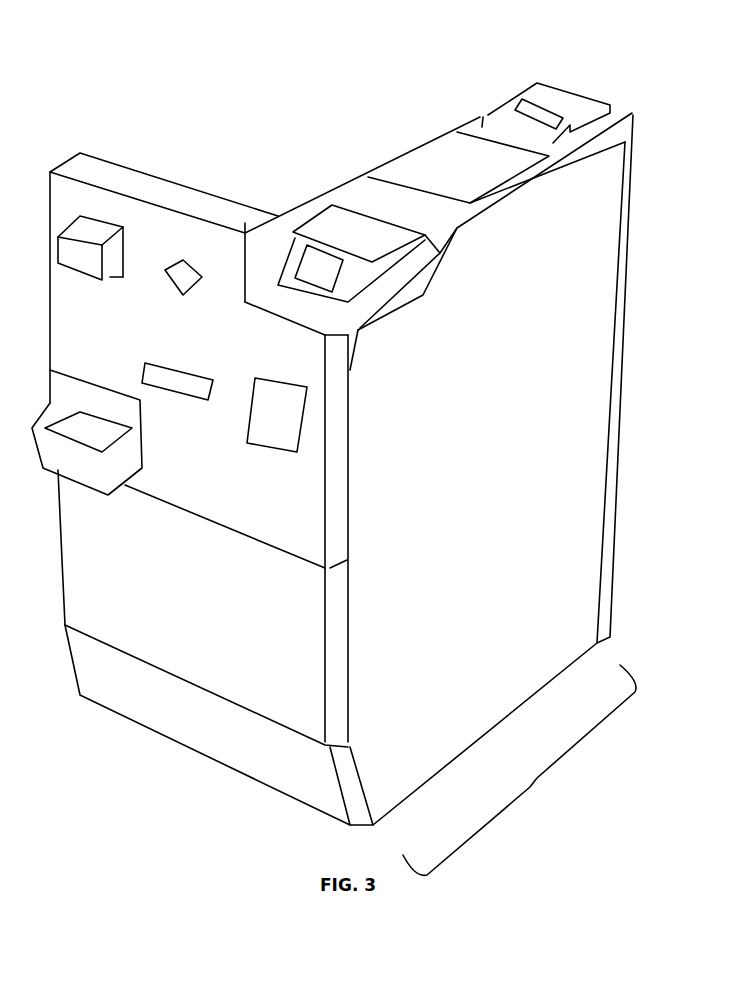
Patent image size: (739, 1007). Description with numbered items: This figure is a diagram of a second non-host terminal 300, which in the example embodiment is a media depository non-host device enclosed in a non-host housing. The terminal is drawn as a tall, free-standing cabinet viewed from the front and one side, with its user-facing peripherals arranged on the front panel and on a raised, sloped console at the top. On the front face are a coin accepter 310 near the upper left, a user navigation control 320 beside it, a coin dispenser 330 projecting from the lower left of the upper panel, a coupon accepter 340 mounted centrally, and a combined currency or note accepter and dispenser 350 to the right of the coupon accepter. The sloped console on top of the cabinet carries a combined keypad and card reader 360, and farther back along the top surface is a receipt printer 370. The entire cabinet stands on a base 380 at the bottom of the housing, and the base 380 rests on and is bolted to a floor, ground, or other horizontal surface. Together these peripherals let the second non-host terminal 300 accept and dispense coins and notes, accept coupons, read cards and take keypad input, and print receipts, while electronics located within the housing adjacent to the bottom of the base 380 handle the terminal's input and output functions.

The second non-host terminal 300 is at (412, 88).
The coin accepter 310 is at (72, 270).
The user navigation control 320 is at (182, 262).
The coin dispenser 330 is at (88, 475).
The coupon accepter 340 is at (156, 372).
The combined currency or note accepter and dispenser 350 is at (247, 432).
The combined keypad and card reader 360 is at (307, 290).
The receipt printer 370 is at (553, 112).
The base 380 is at (537, 778).